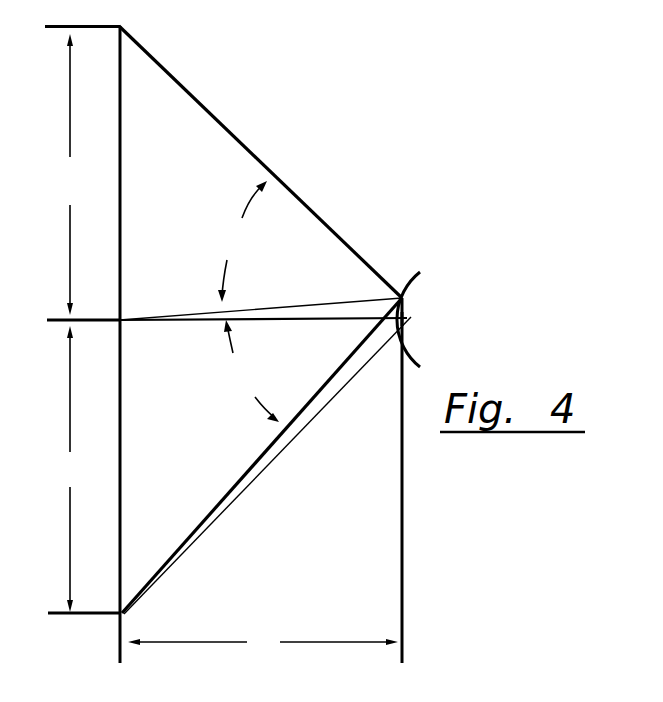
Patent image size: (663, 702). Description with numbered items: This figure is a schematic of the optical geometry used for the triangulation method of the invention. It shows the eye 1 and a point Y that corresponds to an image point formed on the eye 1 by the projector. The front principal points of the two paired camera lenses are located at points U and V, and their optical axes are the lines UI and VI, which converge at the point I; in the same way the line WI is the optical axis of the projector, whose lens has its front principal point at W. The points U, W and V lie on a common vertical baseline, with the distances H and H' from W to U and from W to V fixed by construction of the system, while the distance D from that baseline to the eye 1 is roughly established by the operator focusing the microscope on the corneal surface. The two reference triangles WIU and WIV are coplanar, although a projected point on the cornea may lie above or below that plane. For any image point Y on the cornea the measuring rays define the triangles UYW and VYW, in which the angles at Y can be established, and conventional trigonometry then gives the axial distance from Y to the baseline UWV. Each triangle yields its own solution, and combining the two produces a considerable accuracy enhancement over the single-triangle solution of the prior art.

The eye 1 is at (415, 273).
The front principal point of first camera lens U is at (123, 23).
The front principal point of projector lens W is at (227, 337).
The front principal point of second camera lens V is at (125, 613).
The image point on the eye Y is at (403, 298).
The optical axis intersection point I is at (408, 318).
The distance from W to U H is at (69, 174).
The distance from W to V H' is at (69, 469).
The axial distance to the eye D is at (263, 642).